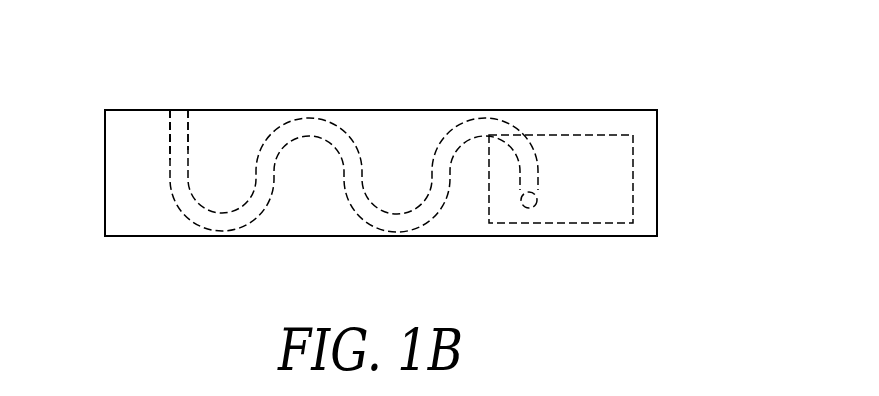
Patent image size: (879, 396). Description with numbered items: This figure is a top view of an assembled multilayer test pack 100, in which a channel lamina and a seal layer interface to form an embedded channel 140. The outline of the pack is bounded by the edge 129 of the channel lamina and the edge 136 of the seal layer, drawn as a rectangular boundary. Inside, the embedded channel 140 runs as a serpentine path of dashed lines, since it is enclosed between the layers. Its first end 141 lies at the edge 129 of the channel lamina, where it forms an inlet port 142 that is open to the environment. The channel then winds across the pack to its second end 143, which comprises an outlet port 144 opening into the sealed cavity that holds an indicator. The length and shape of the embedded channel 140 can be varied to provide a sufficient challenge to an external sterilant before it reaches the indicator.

The multilayer test pack 100 is at (613, 54).
The edge 129 is at (241, 110).
The edge 136 is at (294, 236).
The embedded channel 140 is at (335, 132).
The first end 141 is at (153, 96).
The inlet port 142 is at (177, 110).
The second end 143 is at (572, 182).
The outlet port 144 is at (538, 200).